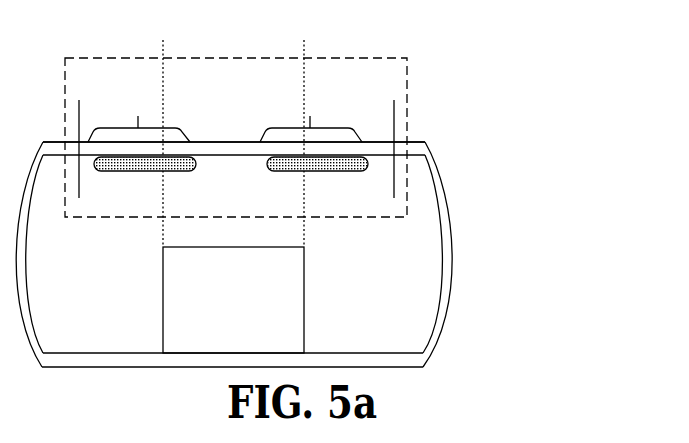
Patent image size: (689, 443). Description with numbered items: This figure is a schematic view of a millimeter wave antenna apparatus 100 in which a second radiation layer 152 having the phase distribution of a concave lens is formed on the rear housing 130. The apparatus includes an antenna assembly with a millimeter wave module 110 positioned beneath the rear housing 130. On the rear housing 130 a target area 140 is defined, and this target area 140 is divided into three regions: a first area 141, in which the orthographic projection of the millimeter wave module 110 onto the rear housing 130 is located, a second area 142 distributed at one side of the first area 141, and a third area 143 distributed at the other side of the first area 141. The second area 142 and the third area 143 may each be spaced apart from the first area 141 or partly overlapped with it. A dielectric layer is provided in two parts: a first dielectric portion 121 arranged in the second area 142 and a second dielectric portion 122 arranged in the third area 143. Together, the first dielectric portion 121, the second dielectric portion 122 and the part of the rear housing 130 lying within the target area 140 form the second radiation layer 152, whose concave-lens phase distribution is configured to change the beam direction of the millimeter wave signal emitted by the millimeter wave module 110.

The millimeter wave antenna apparatus 100 is at (514, 109).
The millimeter wave module 110 is at (306, 290).
The first dielectric portion 121 is at (146, 162).
The second dielectric portion 122 is at (306, 163).
The rear housing 130 is at (412, 148).
The target area 140 is at (393, 100).
The first area 141 is at (164, 41).
The second area 142 is at (142, 122).
The third area 143 is at (312, 122).
The second radiation layer 152 is at (405, 207).